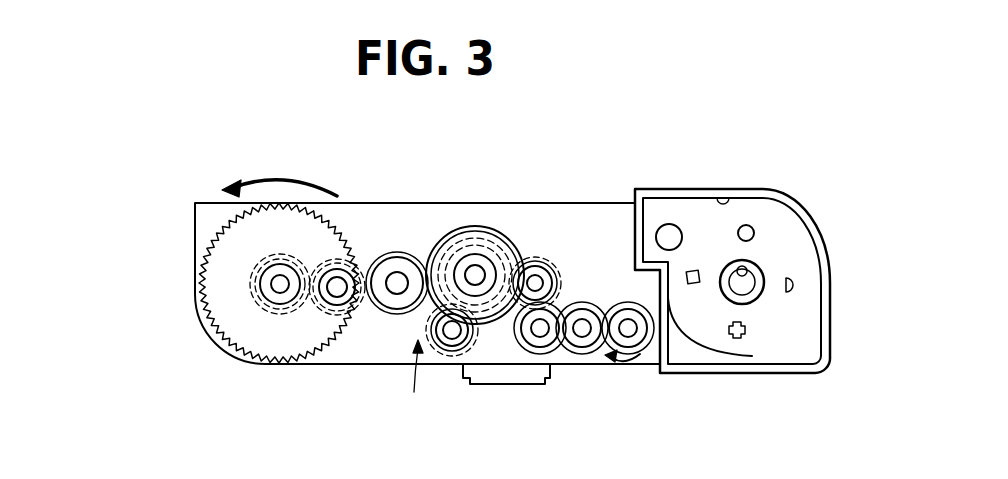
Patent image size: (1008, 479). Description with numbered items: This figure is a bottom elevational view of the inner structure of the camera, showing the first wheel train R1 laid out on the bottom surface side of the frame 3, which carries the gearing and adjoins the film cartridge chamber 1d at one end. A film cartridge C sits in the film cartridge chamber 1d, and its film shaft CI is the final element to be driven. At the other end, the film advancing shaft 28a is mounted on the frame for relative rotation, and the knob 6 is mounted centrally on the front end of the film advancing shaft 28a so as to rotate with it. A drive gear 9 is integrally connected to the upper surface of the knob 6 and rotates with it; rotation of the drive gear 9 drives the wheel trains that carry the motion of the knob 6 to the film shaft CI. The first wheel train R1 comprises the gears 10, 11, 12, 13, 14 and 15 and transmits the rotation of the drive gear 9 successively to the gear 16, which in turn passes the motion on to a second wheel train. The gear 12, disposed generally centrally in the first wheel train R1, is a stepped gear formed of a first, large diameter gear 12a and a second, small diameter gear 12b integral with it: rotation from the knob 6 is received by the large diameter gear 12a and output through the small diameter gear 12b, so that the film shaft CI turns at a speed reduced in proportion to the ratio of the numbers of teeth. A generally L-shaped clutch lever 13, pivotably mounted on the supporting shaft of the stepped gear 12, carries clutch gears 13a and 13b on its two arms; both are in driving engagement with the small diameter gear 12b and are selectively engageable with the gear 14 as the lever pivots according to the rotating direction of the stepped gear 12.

The base plate 3 is at (510, 385).
The knob 6 is at (227, 227).
The drive gear 9 is at (270, 308).
The gear 10 is at (368, 307).
The gear 11 is at (396, 253).
The stepped gear 12 is at (465, 226).
The first, large diameter gear 12a is at (492, 228).
The second, small diameter gear 12b is at (498, 244).
The clutch lever 13 is at (533, 258).
The clutch gear 13a is at (549, 262).
The clutch gear 13b is at (477, 352).
The gear 14 is at (557, 351).
The gear 15 is at (590, 353).
The gear 16 is at (647, 352).
The film advancing shaft 28a is at (262, 286).
The first wheel train R1 is at (413, 386).
The film cartridge chamber 1d is at (740, 200).
The film cartridge C is at (777, 347).
The film shaft CI is at (758, 272).